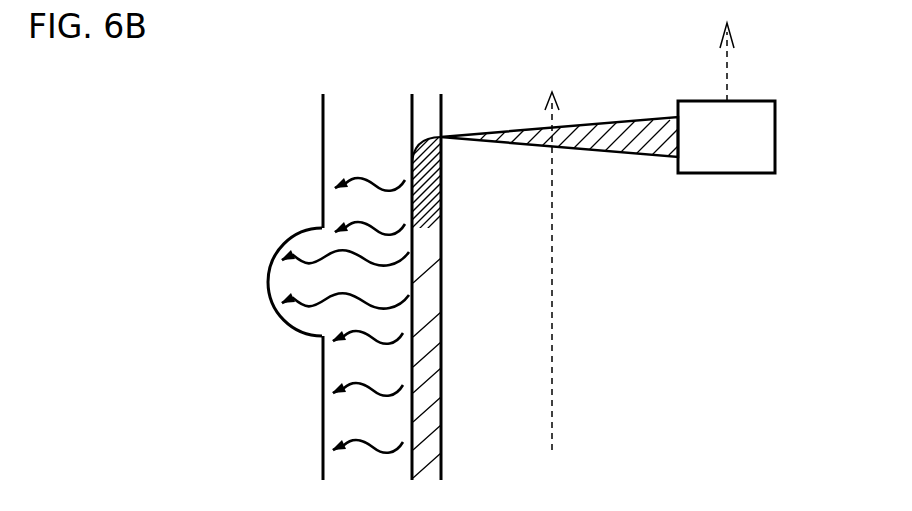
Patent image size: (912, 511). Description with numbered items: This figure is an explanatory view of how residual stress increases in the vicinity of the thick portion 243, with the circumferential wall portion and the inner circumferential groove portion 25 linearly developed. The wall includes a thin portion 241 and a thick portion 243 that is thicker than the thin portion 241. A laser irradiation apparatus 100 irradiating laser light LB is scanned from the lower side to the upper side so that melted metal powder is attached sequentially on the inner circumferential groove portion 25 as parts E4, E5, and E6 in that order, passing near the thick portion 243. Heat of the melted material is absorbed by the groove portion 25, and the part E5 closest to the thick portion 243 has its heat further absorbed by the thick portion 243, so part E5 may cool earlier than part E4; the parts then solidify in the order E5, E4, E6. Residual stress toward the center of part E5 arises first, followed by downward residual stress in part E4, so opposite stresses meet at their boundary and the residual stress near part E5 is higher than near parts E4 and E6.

The inner circumferential groove portion 25 is at (425, 105).
The thick portion 243 is at (298, 240).
The thin portion 241 is at (334, 463).
The laser irradiation apparatus 100 is at (762, 127).
The laser light LB is at (619, 118).
The part E4 of the melted material E4 is at (452, 345).
The part E5 of the melted material E5 is at (452, 230).
The part E6 of the melted material E6 is at (452, 138).